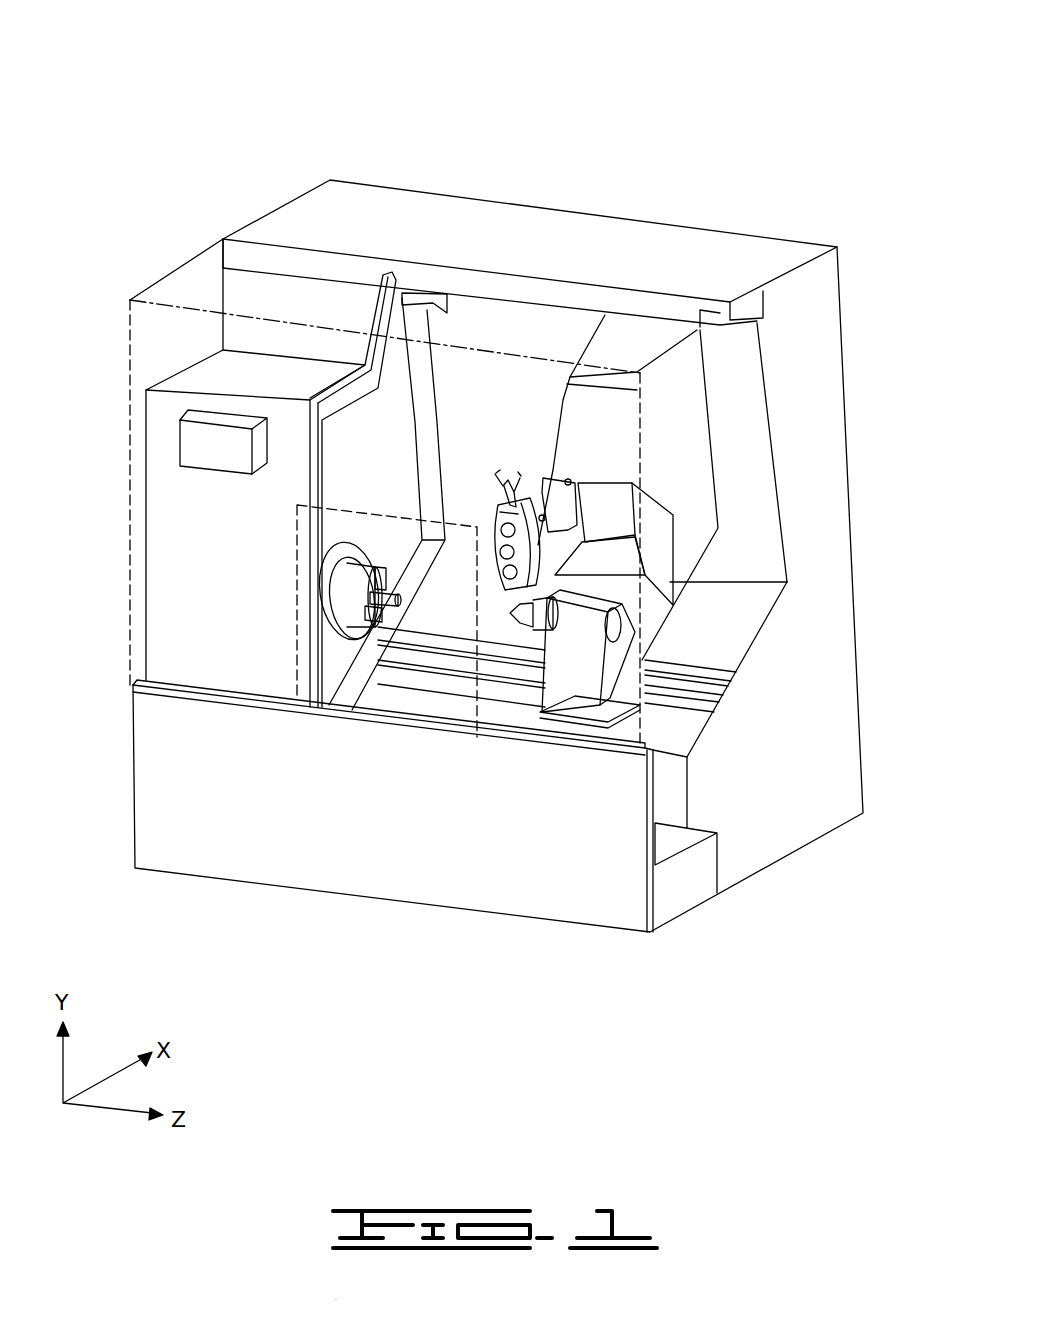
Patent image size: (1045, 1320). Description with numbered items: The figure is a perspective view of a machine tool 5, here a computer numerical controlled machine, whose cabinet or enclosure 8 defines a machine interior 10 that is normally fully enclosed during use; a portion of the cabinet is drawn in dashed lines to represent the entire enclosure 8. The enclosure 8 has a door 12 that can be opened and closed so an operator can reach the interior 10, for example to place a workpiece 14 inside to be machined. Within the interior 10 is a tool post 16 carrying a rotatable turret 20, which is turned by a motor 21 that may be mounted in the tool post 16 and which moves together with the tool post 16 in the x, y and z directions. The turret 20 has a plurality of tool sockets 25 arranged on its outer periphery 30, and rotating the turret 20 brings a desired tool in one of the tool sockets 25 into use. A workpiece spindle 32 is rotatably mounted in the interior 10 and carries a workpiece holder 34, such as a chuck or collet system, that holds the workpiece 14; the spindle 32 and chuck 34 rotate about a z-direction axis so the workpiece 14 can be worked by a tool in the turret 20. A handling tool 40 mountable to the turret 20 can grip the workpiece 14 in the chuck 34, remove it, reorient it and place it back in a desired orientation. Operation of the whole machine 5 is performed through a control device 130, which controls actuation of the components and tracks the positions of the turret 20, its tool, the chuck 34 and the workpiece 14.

The machine tool 5 is at (184, 84).
The cabinet or enclosure 8 is at (845, 330).
The machine interior 10 is at (468, 382).
The door 12 is at (297, 613).
The workpiece 14 is at (380, 622).
The tool post 16 is at (642, 342).
The rotatable turret 20 is at (560, 523).
The motor 21 is at (553, 583).
The tool sockets 25 is at (713, 703).
The outer periphery 30 is at (490, 588).
The workpiece spindle 32 is at (348, 610).
The workpiece holder 34 is at (377, 563).
The handling tool 40 is at (510, 478).
The control device 130 is at (185, 441).